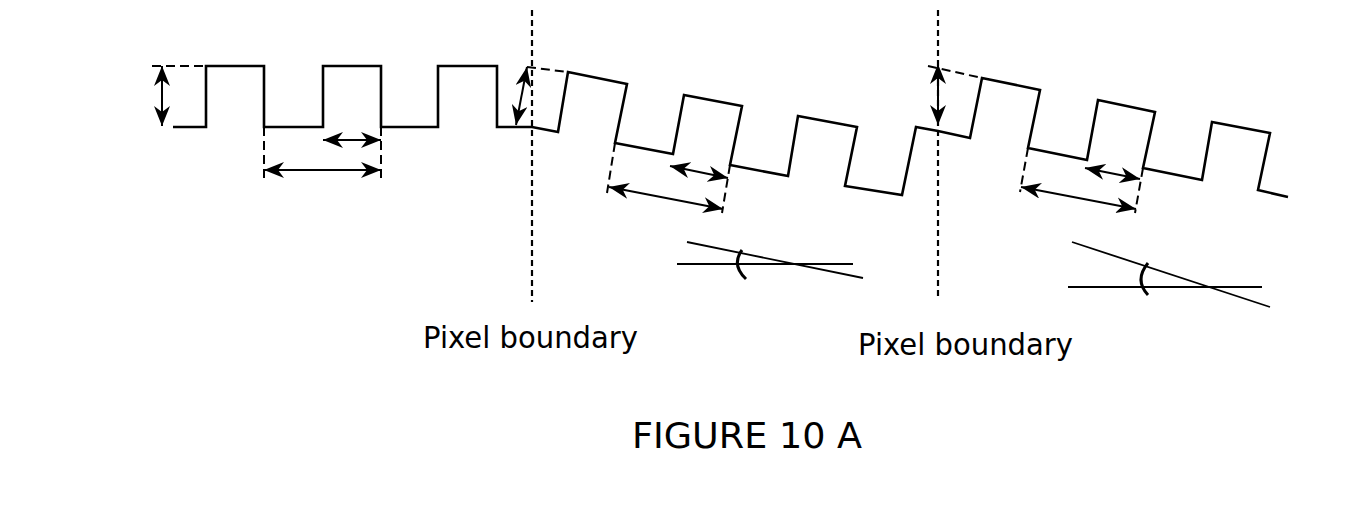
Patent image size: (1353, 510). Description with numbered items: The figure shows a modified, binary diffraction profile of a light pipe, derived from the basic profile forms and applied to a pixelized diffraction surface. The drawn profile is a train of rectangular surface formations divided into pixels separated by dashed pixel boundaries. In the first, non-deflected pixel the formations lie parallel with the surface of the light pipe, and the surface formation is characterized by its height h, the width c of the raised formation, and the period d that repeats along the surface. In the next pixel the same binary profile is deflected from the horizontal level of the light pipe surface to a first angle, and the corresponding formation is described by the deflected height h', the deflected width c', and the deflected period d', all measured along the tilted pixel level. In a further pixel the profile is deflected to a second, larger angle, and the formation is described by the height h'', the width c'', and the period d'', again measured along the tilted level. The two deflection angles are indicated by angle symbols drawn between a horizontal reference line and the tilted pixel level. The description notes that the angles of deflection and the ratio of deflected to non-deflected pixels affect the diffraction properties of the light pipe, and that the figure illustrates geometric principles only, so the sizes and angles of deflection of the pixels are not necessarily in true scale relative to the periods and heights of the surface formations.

The groove depth (height) of untilted grating h is at (165, 96).
The groove width of untilted grating c is at (352, 120).
The grating period of untilted grating d is at (322, 152).
The groove depth of grating tilted by angle phi h' is at (533, 83).
The groove width of grating tilted by angle phi c' is at (699, 157).
The grating period of grating tilted by angle phi d' is at (668, 178).
The groove depth of grating tilted by angle Phi h'' is at (933, 94).
The groove width of grating tilted by angle Phi c'' is at (1114, 155).
The grating period of grating tilted by angle Phi d'' is at (1081, 180).